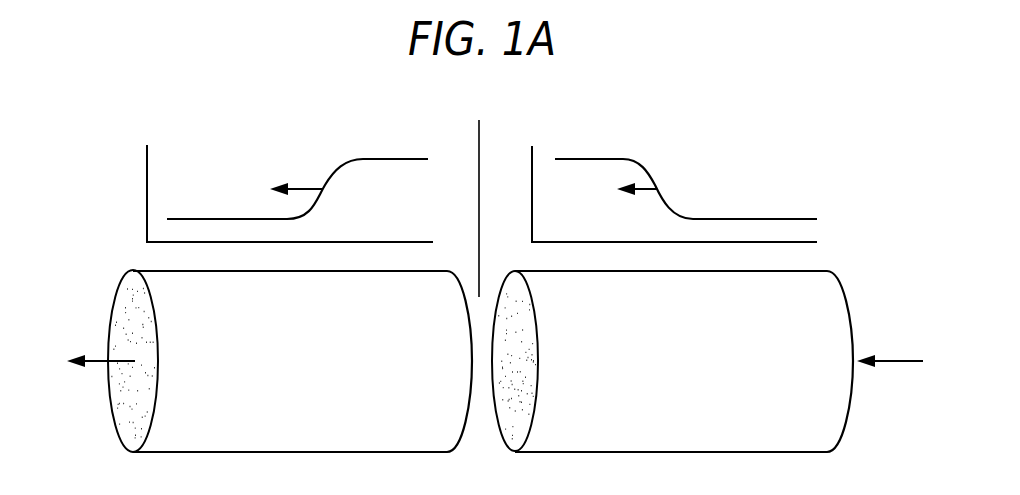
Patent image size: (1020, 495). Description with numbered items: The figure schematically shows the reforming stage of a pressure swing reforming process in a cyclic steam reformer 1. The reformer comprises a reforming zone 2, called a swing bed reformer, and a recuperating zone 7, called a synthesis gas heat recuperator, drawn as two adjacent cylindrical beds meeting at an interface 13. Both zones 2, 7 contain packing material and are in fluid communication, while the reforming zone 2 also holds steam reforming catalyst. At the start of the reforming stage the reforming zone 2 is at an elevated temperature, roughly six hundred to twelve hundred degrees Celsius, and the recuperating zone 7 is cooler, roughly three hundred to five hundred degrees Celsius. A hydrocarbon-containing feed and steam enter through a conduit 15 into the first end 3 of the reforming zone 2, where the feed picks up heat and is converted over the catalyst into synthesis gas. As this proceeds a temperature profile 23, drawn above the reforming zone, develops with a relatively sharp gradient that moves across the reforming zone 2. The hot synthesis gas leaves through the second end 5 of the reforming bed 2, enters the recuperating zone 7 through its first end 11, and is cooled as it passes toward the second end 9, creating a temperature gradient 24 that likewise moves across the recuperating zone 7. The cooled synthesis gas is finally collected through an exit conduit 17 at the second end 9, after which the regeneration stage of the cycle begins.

The cyclic steam reformer 1 is at (850, 275).
The reforming zone 2 is at (668, 416).
The first end of the reforming zone 3 is at (847, 415).
The second end of the reforming zone 5 is at (518, 407).
The recuperating zone 7 is at (293, 415).
The second end of the recuperating zone 9 is at (130, 407).
The first end of the recuperating zone 11 is at (468, 418).
The interface 13 is at (480, 197).
The conduit 15 is at (902, 361).
The exit conduit 17 is at (98, 365).
The temperature profile 23 is at (655, 176).
The temperature gradient 24 is at (323, 182).